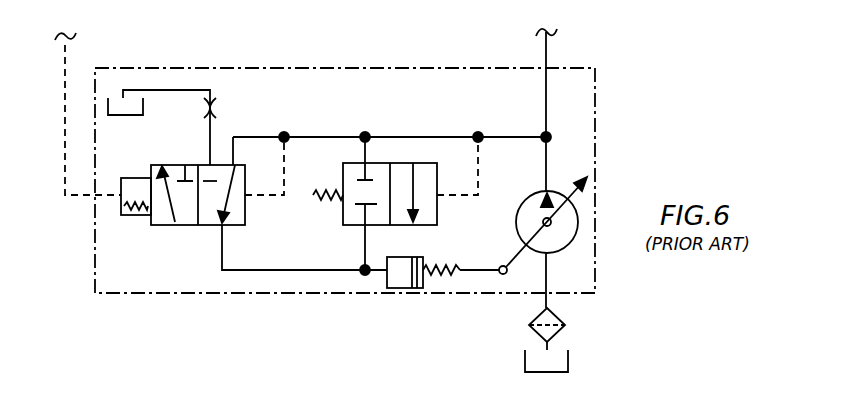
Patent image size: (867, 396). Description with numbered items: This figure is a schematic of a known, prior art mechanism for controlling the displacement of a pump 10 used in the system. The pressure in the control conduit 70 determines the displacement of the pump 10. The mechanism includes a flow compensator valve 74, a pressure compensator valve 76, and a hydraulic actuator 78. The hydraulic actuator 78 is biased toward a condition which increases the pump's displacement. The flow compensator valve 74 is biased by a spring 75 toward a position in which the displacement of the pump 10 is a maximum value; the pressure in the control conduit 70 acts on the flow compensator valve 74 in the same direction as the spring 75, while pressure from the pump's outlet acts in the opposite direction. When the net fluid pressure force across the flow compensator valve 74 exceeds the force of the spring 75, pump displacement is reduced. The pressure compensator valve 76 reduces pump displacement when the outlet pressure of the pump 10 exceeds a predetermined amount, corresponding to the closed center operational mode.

The pump 10 is at (567, 230).
The control conduit 70 is at (65, 94).
The flow compensator valve 74 is at (146, 231).
The spring 75 is at (122, 205).
The pressure compensator valve 76 is at (338, 230).
The hydraulic actuator 78 is at (394, 296).